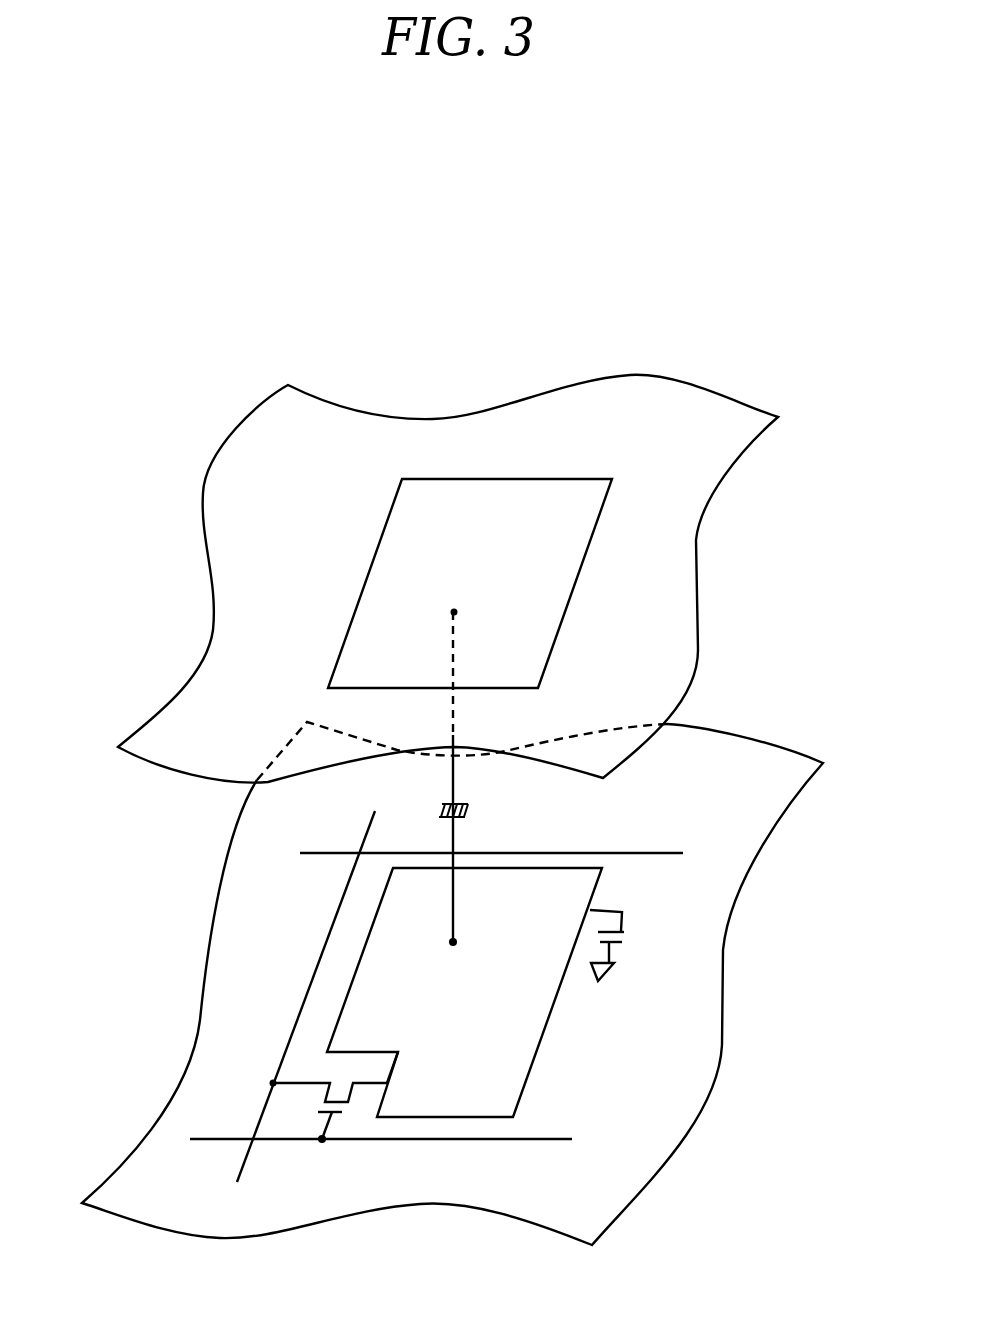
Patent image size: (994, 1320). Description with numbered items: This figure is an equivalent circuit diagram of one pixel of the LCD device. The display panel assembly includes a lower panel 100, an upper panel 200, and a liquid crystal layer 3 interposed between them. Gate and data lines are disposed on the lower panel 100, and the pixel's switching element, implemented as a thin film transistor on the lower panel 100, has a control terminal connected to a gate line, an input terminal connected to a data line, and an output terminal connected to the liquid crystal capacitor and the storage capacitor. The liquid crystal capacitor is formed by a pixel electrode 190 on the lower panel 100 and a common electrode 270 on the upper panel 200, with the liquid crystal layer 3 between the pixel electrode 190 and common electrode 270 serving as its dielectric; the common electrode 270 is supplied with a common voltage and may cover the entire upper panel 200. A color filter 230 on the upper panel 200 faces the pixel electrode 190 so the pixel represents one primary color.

The liquid crystal layer 3 is at (112, 868).
The lower panel 100 is at (735, 961).
The pixel electrode 190 is at (538, 1050).
The upper panel 200 is at (714, 612).
The color filter 230 is at (572, 602).
The common electrode 270 is at (694, 550).